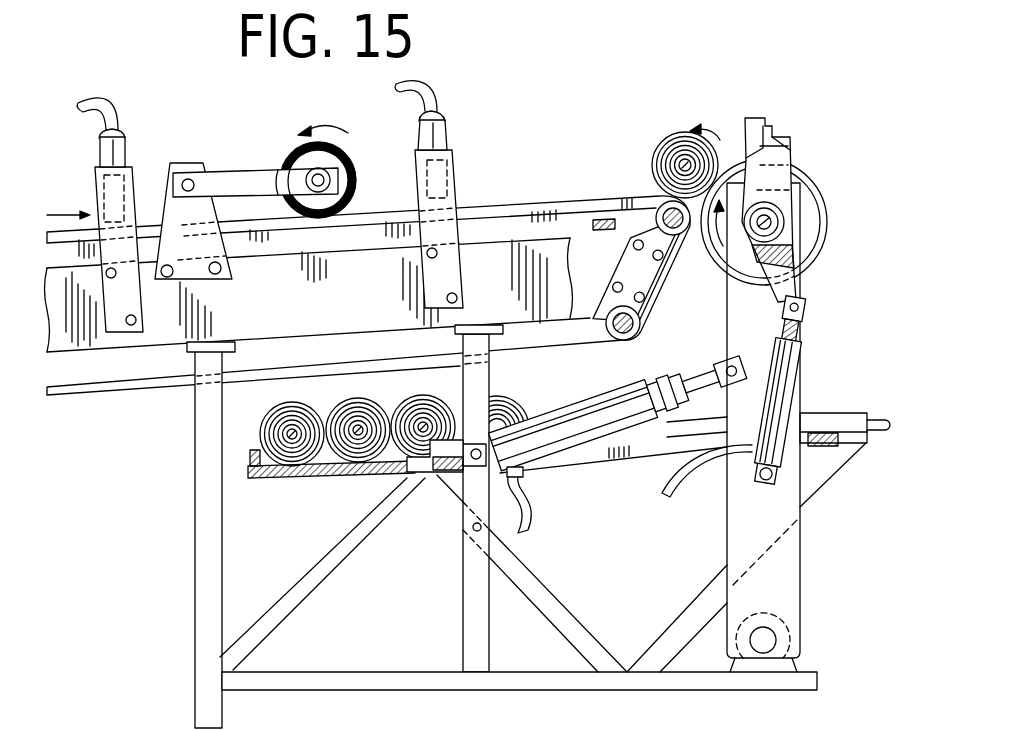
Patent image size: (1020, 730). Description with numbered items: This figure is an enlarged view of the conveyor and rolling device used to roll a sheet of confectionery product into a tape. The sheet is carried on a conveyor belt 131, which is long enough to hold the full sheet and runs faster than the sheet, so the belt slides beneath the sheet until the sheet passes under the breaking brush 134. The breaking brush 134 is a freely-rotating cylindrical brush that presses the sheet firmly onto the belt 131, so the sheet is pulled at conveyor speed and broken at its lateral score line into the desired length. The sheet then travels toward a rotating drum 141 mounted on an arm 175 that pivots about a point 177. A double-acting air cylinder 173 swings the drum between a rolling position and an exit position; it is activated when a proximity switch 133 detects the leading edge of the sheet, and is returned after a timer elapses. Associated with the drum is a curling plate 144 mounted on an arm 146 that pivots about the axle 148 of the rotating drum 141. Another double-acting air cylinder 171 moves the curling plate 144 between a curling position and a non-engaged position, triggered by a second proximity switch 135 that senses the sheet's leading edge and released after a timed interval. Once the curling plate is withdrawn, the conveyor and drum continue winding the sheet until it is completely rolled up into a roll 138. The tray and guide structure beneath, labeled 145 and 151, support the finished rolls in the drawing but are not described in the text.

The conveyor belt 131 is at (514, 207).
The proximity switch 133 is at (121, 152).
The breaking brush 134 is at (354, 166).
The proximity switch 135 is at (443, 128).
The roll 138 is at (650, 150).
The rotating drum 141 is at (833, 240).
The curling plate 144 is at (744, 131).
The tray 145 is at (370, 482).
The arm 146 is at (773, 178).
The axle 148 is at (768, 222).
The guide plate 151 is at (350, 456).
The double-acting air cylinder 171 is at (780, 372).
The double-acting air cylinder 173 is at (588, 423).
The arm 175 is at (740, 290).
The pivot point 177 is at (760, 642).